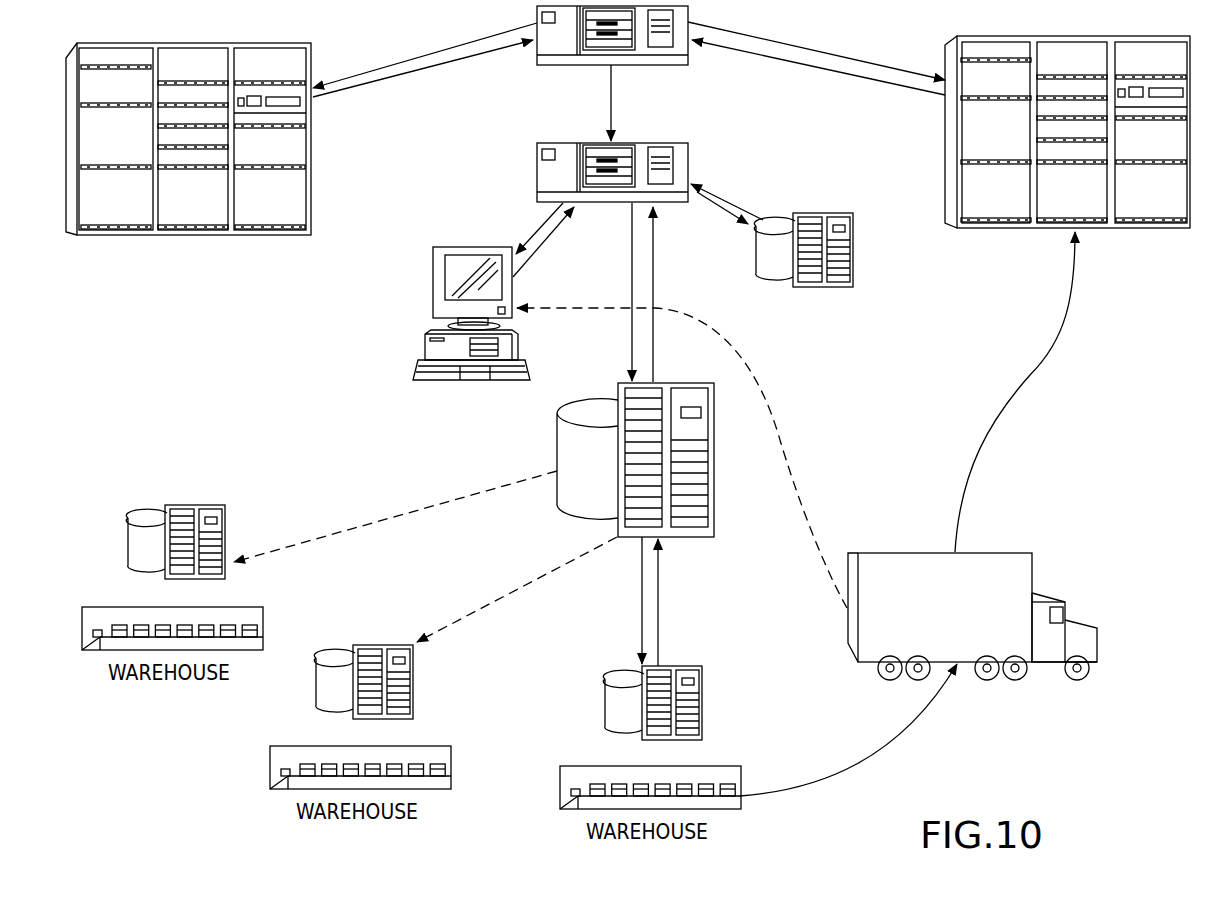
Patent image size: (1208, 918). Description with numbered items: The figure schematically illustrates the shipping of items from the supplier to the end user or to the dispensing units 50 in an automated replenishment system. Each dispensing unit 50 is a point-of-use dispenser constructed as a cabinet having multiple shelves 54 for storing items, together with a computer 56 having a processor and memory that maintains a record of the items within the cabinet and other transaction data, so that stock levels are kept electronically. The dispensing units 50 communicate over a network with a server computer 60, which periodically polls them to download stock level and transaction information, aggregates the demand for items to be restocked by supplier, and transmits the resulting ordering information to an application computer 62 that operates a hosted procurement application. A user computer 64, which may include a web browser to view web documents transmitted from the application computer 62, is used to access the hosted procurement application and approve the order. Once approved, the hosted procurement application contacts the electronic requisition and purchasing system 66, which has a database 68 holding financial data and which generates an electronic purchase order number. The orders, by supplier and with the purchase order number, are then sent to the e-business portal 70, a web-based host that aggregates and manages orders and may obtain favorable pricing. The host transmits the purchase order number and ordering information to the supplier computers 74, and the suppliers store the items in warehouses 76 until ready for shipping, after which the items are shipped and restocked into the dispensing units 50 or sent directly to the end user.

The dispensing unit 50 is at (312, 212).
The shelf 54 is at (178, 168).
The computer 56 is at (181, 83).
The server computer 60 is at (688, 17).
The application computer 62 is at (688, 146).
The user computer 64 is at (518, 345).
The electronic requisition and purchasing (ERP) system 66 is at (853, 268).
The database 68 is at (780, 270).
The e-business portal 70 is at (715, 468).
The supplier computer 74 is at (225, 518).
The warehouse 76 is at (263, 618).